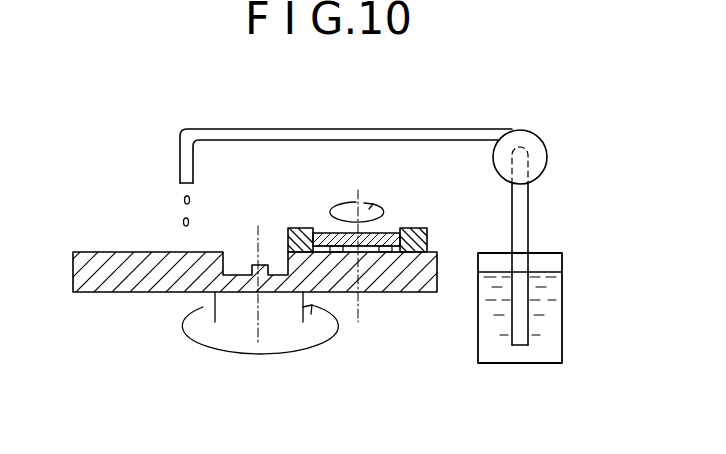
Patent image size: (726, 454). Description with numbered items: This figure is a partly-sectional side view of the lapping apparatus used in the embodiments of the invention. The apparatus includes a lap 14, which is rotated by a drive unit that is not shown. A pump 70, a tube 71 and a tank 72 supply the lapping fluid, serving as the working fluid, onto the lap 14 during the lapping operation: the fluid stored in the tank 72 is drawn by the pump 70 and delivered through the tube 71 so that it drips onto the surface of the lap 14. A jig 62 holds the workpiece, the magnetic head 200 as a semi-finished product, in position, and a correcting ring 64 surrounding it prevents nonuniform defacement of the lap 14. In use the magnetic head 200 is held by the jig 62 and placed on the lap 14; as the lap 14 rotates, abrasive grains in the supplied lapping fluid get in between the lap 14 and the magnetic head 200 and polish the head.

The lap 14 is at (116, 285).
The jig 62 is at (366, 247).
The correcting ring 64 is at (300, 228).
The pump 70 is at (528, 130).
The tube 71 is at (178, 163).
The tank 72 is at (562, 342).
The magnetic head 200 is at (333, 247).